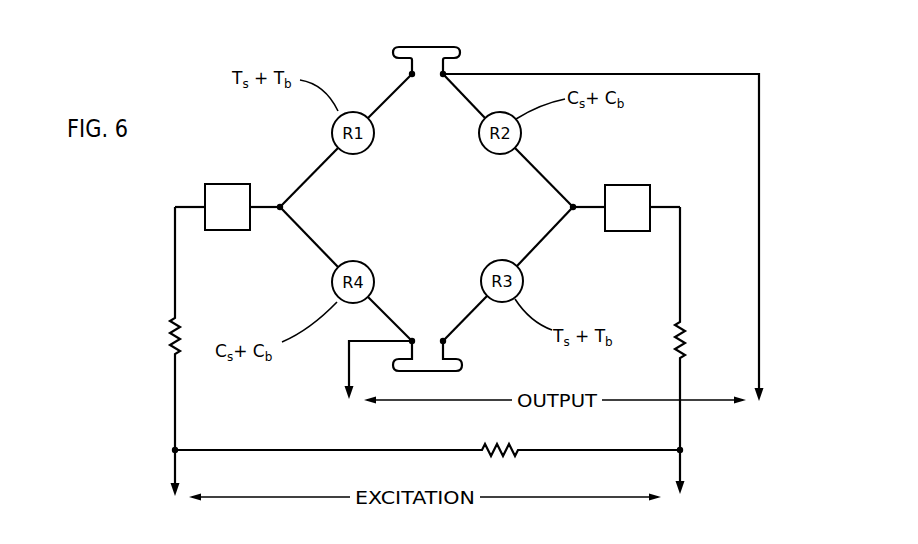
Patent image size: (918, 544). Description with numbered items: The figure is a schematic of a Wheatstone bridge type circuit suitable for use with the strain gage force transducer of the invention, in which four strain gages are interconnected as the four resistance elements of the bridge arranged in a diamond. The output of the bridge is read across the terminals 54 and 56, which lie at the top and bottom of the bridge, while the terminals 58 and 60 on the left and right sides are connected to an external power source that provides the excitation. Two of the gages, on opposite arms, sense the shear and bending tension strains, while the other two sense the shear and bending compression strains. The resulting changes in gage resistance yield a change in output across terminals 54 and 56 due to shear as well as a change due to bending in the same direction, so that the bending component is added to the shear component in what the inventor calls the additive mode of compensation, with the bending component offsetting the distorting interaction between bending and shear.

The output terminal 54 is at (443, 74).
The output terminal 56 is at (412, 341).
The power terminal 58 is at (573, 207).
The power terminal 60 is at (280, 207).